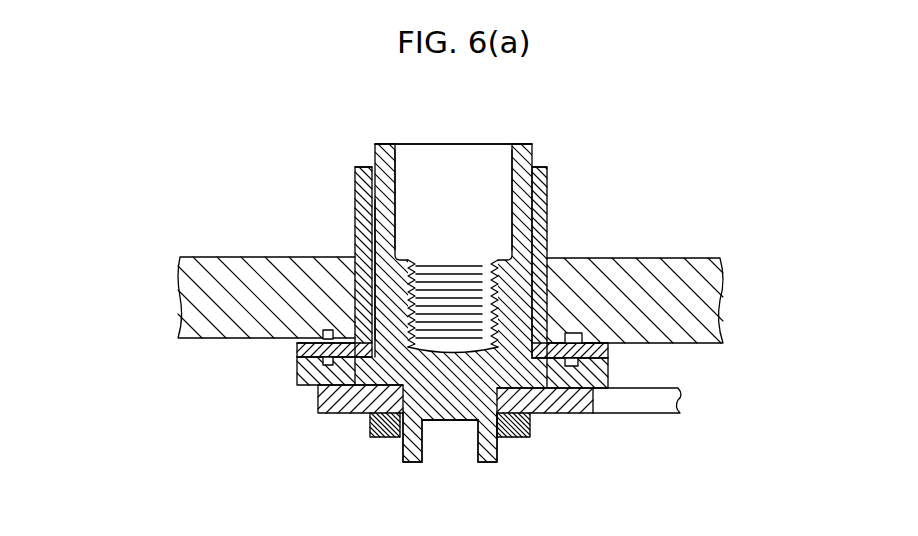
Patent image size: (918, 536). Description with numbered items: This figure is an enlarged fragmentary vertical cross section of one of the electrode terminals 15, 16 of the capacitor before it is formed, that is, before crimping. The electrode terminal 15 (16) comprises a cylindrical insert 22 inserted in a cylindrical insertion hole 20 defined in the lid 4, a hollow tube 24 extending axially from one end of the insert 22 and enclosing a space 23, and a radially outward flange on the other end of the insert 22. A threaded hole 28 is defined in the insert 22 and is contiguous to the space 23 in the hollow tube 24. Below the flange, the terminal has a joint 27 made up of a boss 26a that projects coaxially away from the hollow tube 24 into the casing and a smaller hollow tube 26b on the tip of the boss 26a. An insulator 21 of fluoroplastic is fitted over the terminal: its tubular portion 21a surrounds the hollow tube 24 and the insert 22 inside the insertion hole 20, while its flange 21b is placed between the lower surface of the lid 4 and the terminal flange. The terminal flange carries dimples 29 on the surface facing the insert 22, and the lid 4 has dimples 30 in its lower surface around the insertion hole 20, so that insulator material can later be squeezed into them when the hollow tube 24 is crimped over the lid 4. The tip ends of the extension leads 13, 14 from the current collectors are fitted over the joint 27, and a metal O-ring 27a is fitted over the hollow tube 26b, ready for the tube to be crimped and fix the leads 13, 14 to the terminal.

The lid 4 is at (665, 257).
The anode extension leads 13 is at (667, 436).
The cathode extension leads 14 is at (643, 402).
The anode electrode terminal 15 is at (525, 116).
The cathode electrode terminal 16 is at (538, 131).
The insertion hole 20 is at (533, 240).
The insulator 21 is at (550, 170).
The tubular portion 21a is at (357, 195).
The flange 21b is at (300, 335).
The cylindrical insert 22 is at (388, 275).
The space 23 is at (510, 215).
The hollow tube 24 is at (388, 143).
The boss 26a is at (455, 403).
The hollow tube 26b is at (423, 433).
The joint 27 is at (505, 458).
The O-ring 27a is at (383, 437).
The threaded hole 28 is at (437, 300).
The dimples 29 is at (328, 366).
The dimples 30 is at (323, 330).